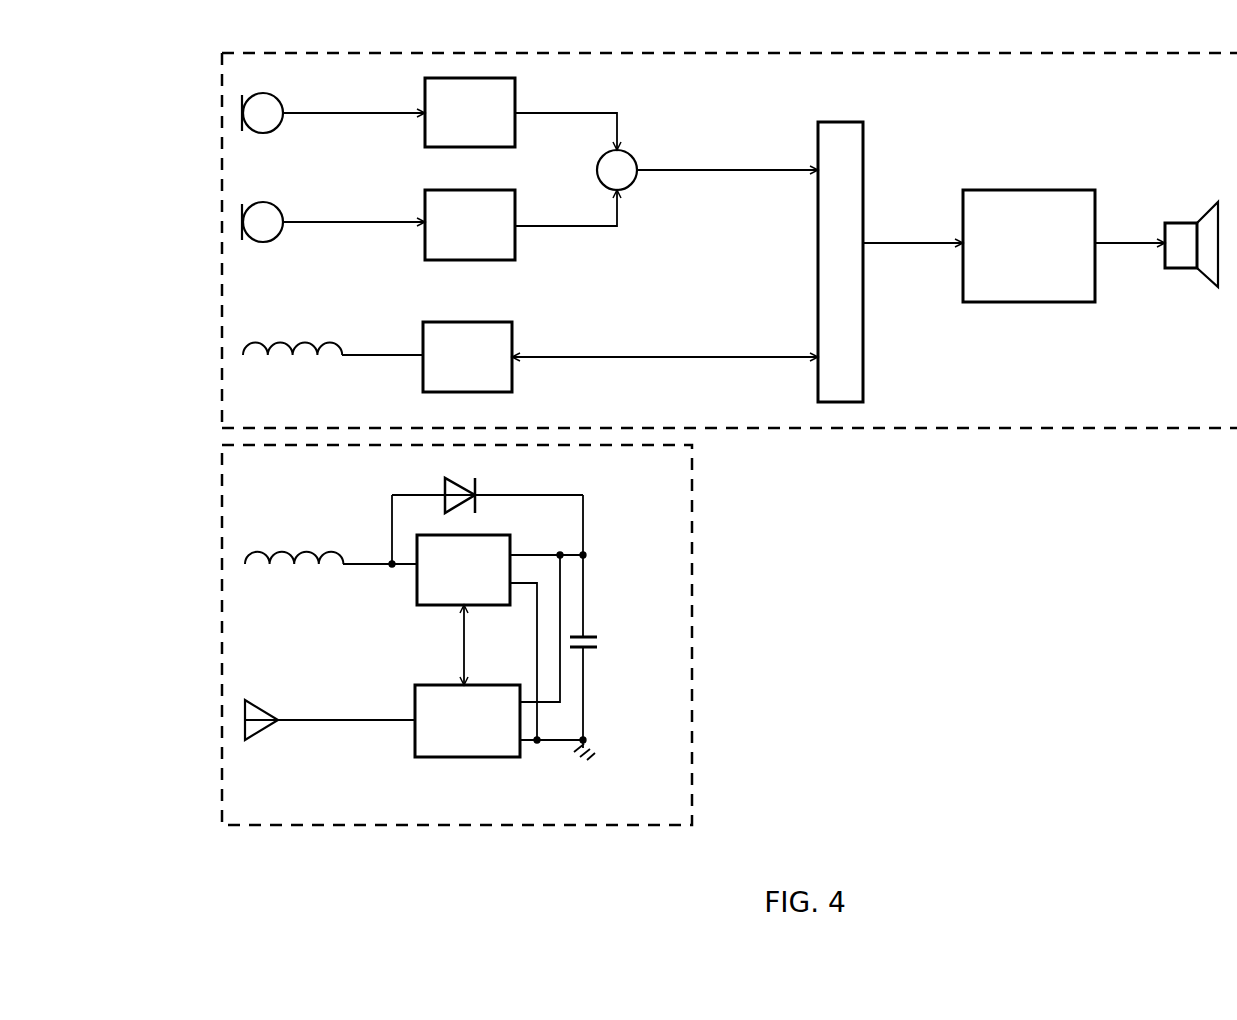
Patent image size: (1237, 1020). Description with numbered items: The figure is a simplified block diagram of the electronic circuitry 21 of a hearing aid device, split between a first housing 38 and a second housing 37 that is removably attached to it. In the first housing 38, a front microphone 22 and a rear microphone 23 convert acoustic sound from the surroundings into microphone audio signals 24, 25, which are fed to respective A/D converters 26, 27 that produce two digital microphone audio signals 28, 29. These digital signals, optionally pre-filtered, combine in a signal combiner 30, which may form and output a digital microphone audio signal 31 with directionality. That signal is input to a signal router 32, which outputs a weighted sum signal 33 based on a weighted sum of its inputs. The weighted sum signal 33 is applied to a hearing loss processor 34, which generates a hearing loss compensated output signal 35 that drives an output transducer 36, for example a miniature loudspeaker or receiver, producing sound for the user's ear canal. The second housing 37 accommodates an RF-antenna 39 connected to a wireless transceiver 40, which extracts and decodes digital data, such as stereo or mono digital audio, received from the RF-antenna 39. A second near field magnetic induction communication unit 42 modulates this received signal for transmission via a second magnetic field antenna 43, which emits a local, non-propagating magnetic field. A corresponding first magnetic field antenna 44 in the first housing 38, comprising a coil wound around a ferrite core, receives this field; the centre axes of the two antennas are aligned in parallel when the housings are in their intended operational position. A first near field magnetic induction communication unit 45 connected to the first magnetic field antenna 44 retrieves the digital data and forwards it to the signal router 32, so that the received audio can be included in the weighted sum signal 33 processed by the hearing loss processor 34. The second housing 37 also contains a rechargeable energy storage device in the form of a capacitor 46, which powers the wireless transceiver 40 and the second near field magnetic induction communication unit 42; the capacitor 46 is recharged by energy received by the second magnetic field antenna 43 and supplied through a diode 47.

The hearing device circuitry 21 is at (914, 624).
The front microphone 22 is at (242, 118).
The rear microphone 23 is at (283, 210).
The microphone audio signal 24 is at (340, 112).
The microphone audio signal 25 is at (355, 222).
The A/D converter 26 is at (470, 78).
The A/D converter 27 is at (432, 261).
The digital microphone audio signal 28 is at (575, 113).
The digital microphone audio signal 29 is at (568, 228).
The signal combiner 30 is at (632, 156).
The digital microphone audio signal 31 is at (745, 170).
The signal router 32 is at (863, 170).
The weighted sum signal 33 is at (940, 247).
The hearing loss processor 34 is at (1042, 302).
The hearing loss compensated output signal 35 is at (1113, 243).
The output transducer 36 is at (1197, 272).
The second housing 37 is at (692, 590).
The first housing 38 is at (992, 428).
The RF-antenna 39 is at (272, 714).
The wireless transceiver 40 is at (410, 745).
The second near field magnetic induction communication unit 42 is at (415, 598).
The second magnetic field antenna 43 is at (258, 560).
The first magnetic field antenna 44 is at (258, 352).
The first near field magnetic induction communication unit 45 is at (512, 335).
The capacitor 46 is at (590, 635).
The diode 47 is at (455, 490).